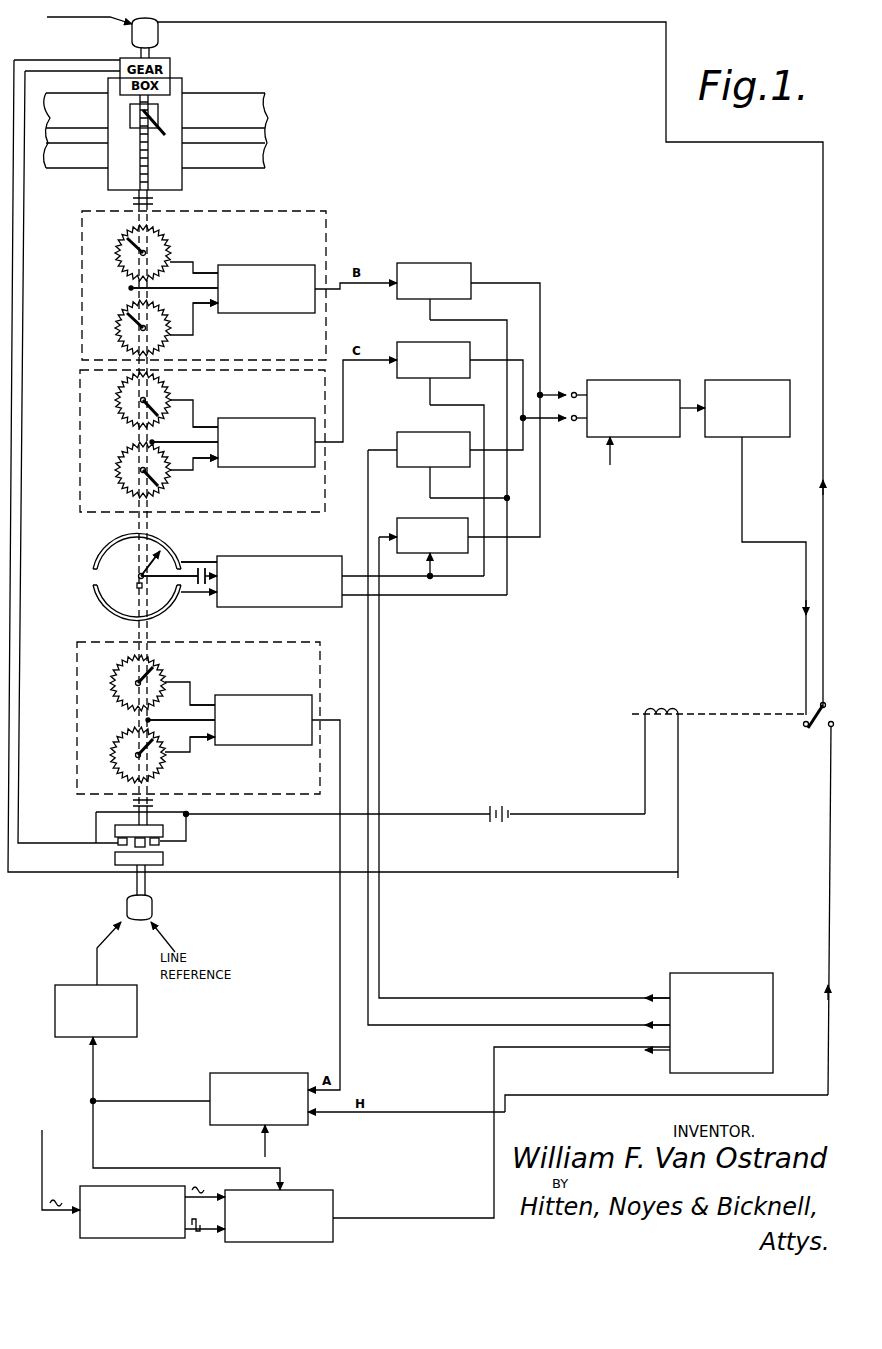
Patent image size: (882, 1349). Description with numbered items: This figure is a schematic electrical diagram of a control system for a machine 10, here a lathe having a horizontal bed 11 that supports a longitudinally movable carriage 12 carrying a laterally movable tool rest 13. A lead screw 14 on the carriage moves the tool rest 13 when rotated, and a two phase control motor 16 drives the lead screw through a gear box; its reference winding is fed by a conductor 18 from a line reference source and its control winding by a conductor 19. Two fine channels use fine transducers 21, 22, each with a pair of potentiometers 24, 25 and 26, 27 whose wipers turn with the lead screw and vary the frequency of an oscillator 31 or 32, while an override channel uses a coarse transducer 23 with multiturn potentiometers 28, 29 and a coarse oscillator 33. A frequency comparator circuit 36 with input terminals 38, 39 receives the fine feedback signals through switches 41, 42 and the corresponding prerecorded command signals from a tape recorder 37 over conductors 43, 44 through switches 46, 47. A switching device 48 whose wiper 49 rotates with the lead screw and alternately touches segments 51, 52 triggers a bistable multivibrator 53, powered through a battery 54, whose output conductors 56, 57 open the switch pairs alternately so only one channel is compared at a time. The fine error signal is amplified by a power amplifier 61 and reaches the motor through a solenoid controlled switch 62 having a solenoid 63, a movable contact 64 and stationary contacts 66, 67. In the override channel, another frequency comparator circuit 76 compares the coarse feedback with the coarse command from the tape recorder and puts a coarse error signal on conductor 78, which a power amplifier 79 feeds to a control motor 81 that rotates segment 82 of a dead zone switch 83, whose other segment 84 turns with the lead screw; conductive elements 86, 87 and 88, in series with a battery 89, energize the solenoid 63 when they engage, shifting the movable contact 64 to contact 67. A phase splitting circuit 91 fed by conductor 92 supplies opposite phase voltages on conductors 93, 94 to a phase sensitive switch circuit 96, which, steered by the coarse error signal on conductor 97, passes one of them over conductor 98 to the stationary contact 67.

The machine 10 is at (238, 82).
The horizontal bed 11 is at (255, 103).
The carriage 12 is at (172, 114).
The tool rest 13 is at (130, 110).
The lead screw 14 is at (150, 170).
The control motor 16 is at (163, 33).
The conductor 18 is at (95, 22).
The conductor 19 is at (415, 24).
The fine transducer 21 is at (336, 240).
The fine transducer 22 is at (325, 505).
The coarse transducer 23 is at (322, 658).
The potentiometer 24 is at (118, 248).
The potentiometer 25 is at (118, 325).
The potentiometer 26 is at (118, 408).
The potentiometer 27 is at (118, 475).
The potentiometer 28 is at (112, 680).
The potentiometer 29 is at (112, 743).
The oscillator 31 is at (268, 316).
The oscillator 32 is at (265, 470).
The coarse oscillator 33 is at (278, 695).
The frequency comparator circuit 36 is at (655, 380).
The tape recorder 37 is at (748, 973).
The input terminal 38 is at (574, 392).
The input terminal 39 is at (574, 421).
The switch 41 is at (452, 263).
The switch 42 is at (412, 342).
The conductor 43 is at (570, 1025).
The conductor 44 is at (515, 998).
The switch 46 is at (412, 432).
The switch 47 is at (412, 518).
The switching device 48 is at (124, 573).
The wiper 49 is at (136, 569).
The segment 51 is at (115, 555).
The segment 52 is at (102, 600).
The bistable multivibrator 53 is at (282, 548).
The battery 54 is at (203, 572).
The conductor 56 is at (400, 578).
The conductor 57 is at (460, 597).
The power amplifier 61 is at (760, 380).
The solenoid controlled switch 62 is at (733, 883).
The solenoid 63 is at (662, 712).
The movable contact 64 is at (812, 740).
The stationary contact 66 is at (803, 726).
The stationary contact 67 is at (826, 740).
The frequency comparator circuit 76 is at (258, 1073).
The conductor 78 is at (167, 1101).
The power amplifier 79 is at (60, 985).
The control motor 81 is at (122, 912).
The segment 82 is at (115, 858).
The dead zone switch 83 is at (159, 857).
The segment 84 is at (115, 831).
The electrically conductive element 86 is at (118, 843).
The electrically conductive element 87 is at (159, 843).
The electrically conductive element 88 is at (145, 848).
The battery 89 is at (508, 812).
The phase splitting circuit 91 is at (80, 1232).
The conductor 92 is at (42, 1172).
The conductor 93 is at (198, 1232).
The conductor 94 is at (208, 1195).
The phase sensitive switch circuit 96 is at (333, 1203).
The conductor 97 is at (122, 1168).
The conductor 98 is at (494, 1134).